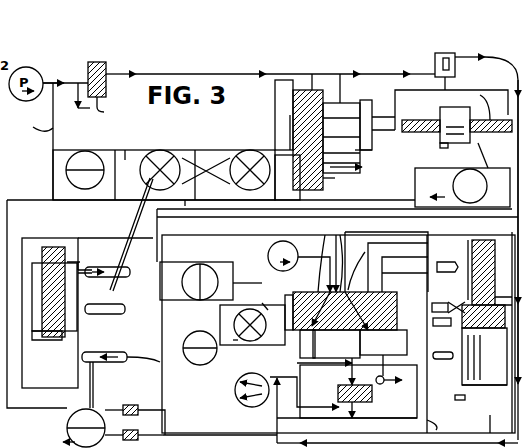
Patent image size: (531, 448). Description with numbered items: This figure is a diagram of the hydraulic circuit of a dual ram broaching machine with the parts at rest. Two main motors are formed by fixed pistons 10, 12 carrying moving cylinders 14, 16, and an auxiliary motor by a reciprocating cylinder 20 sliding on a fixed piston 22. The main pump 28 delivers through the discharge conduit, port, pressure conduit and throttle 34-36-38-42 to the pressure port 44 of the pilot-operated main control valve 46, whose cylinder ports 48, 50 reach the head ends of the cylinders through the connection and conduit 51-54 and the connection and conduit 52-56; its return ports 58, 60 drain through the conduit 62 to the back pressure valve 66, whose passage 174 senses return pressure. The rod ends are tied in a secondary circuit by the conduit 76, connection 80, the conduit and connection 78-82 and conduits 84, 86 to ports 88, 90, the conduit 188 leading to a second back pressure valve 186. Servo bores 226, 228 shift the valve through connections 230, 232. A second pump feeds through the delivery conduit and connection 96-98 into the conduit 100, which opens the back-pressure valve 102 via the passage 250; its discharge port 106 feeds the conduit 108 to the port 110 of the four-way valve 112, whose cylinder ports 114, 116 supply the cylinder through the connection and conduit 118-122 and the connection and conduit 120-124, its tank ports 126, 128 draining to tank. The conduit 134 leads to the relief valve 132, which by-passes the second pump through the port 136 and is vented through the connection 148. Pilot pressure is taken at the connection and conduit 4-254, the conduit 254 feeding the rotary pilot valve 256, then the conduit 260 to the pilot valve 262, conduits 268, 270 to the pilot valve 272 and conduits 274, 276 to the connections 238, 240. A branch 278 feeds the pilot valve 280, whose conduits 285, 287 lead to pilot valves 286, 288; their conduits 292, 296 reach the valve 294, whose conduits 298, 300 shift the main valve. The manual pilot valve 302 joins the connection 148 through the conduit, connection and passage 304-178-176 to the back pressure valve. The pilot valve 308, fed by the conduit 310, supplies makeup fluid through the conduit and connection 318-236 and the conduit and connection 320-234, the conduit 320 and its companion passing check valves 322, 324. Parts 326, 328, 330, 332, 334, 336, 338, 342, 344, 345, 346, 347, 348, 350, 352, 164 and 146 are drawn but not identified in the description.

The conduit 100 is at (78, 83).
The back-pressure valve 102 is at (108, 66).
The discharge port 106 is at (110, 78).
The conduit 108 is at (203, 74).
The passage 250 is at (106, 104).
The delivery conduit and panel connection 96-98 is at (82, 110).
The pilot pressure connection and pilot pressure conduit 4-254 is at (26, 122).
The pilot pressure conduit 254 is at (53, 158).
The rotary four-way pilot valve 256 is at (90, 150).
The conduit 260 is at (125, 150).
The pilot valve 262 is at (162, 150).
The conduit 268 is at (232, 156).
The conduit 270 is at (178, 195).
The pilot valve 272 is at (280, 152).
The conduit 274 is at (290, 130).
The conduit 276 is at (275, 95).
The external connection 240 is at (312, 90).
The pilot operated four-way valve 112 is at (308, 140).
The tank port 126 is at (340, 95).
The port 110 is at (341, 138).
The cylinder port 114 is at (338, 110).
The tank port 128 is at (325, 180).
The cylinder port 116 is at (350, 184).
The connection and conduit 120-124 is at (358, 150).
The connection and conduit 118-122 is at (393, 95).
The fixed piston 22 is at (458, 118).
The reciprocating cylinder 20 is at (488, 110).
The conduit 134 is at (396, 70).
The relief valve 132 is at (455, 65).
The port 136 is at (446, 77).
The flange 336 is at (462, 145).
The link 338 is at (478, 147).
The pilot valve 280 is at (462, 183).
The valve element 334 is at (470, 186).
The line 350 is at (150, 192).
The conduit 310 is at (45, 200).
The branch conduit 278 is at (78, 204).
The external connection 238 is at (315, 205).
The conduit 287 is at (416, 213).
The conduit 285 is at (494, 220).
The conduit and panel connection 78-82 is at (30, 238).
The connection and conduit 52-56 is at (112, 236).
The stop 347 is at (88, 265).
The lever 352 is at (125, 270).
The rod 345 is at (85, 276).
The slot 344 is at (92, 312).
The member 330 is at (90, 318).
The fixed piston 10 is at (40, 340).
The moving cylinder 14 is at (55, 337).
The slot 328 is at (100, 352).
The rod 326 is at (94, 378).
The pilot valve 288 is at (172, 368).
The check valve 322 is at (138, 405).
The conduit 320 is at (120, 432).
The check valve 324 is at (138, 436).
The conduit and panel connection 318-236 is at (163, 412).
The conduit and panel connection 320-234 is at (192, 445).
The pilot valve 308 is at (67, 428).
The pilot valve 286 is at (196, 264).
The conduit 292 is at (222, 283).
The pilot valve 294 is at (236, 305).
The conduit 298 is at (256, 300).
The main pump 28 is at (268, 254).
The cylinder port 50 is at (318, 288).
The discharge conduit, panel port, pressure conduit and throttle 34-36-38-42 is at (290, 238).
The pressure port 44 is at (332, 255).
The connection and conduit 51-54 is at (380, 236).
The cylinder port 48 is at (386, 262).
The port 88 is at (372, 260).
The port 90 is at (385, 272).
The servo piston bore 228 is at (372, 310).
The conduit 84 is at (425, 268).
The servo connection 232 is at (448, 304).
The pilot-operated main control valve 46 is at (345, 311).
The servo connection 230 is at (281, 312).
The servo piston bore 226 is at (310, 345).
The return port 60 is at (330, 335).
The return port 58 is at (383, 342).
The conduit 62 is at (350, 385).
The conduit 188 is at (396, 375).
The second back pressure valve 186 is at (390, 384).
The back pressure valve 66 is at (385, 400).
The line 164 is at (302, 363).
The passage 174 is at (304, 392).
The manually operated pilot valve 302 is at (235, 392).
The valve 342 is at (197, 343).
The conduit 296 is at (238, 340).
The conduit, panel connection and passage 304-178-176 is at (347, 410).
The conduit 300 is at (420, 372).
The pin 332 is at (458, 405).
The slot 346 is at (455, 322).
The slot 348 is at (440, 348).
The fixed piston 12 is at (478, 332).
The moving cylinder 16 is at (487, 385).
The conduit 86 is at (441, 424).
The panel connection 80 is at (464, 420).
The conduit 76 is at (485, 415).
The panel connection 148 is at (400, 252).
The line 146 is at (477, 443).